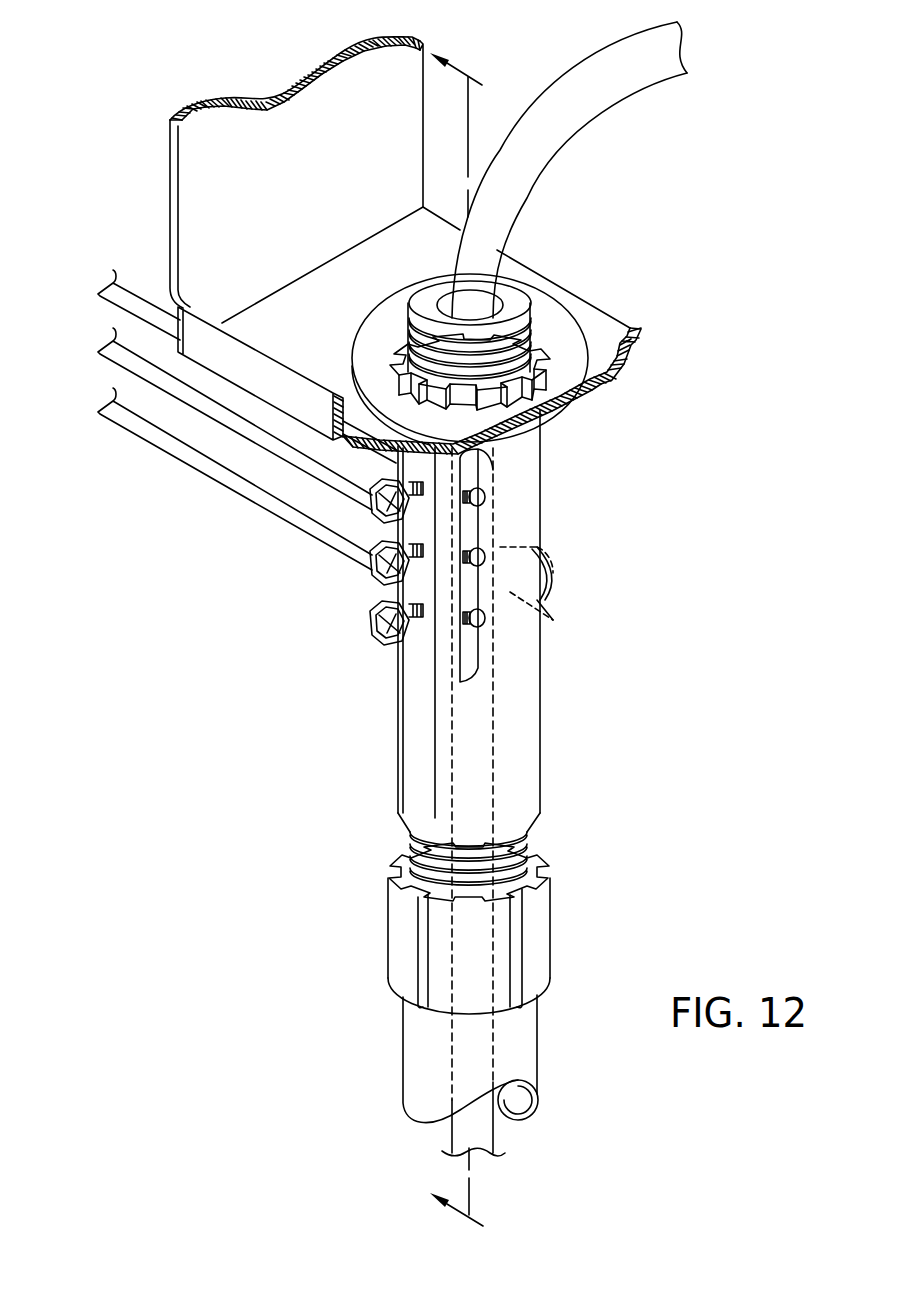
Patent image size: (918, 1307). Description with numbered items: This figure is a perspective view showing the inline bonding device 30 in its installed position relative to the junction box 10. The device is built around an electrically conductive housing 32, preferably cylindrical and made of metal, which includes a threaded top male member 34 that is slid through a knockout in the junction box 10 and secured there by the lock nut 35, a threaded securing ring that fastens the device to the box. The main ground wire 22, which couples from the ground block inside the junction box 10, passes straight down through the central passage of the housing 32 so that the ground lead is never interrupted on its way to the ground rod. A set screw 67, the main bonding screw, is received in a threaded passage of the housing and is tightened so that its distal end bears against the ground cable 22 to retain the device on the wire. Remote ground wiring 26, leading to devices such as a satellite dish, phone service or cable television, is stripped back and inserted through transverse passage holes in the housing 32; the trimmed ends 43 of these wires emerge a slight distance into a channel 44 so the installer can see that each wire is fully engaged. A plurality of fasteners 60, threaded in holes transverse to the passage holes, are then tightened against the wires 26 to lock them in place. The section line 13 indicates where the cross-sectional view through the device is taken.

The junction box 10 is at (230, 204).
The cross-sectional view line 13 is at (473, 644).
The ground wire 22 is at (613, 82).
The wiring 26 is at (158, 469).
The inline bonding device 30 is at (365, 732).
The electrically conductive housing 32 is at (520, 760).
The threaded top male member 34 is at (540, 357).
The lock nut 35 is at (543, 333).
The ends of ground wires 43 is at (486, 560).
The channel 44 is at (470, 650).
The fasteners 60 is at (370, 620).
The set screw 67 is at (553, 620).